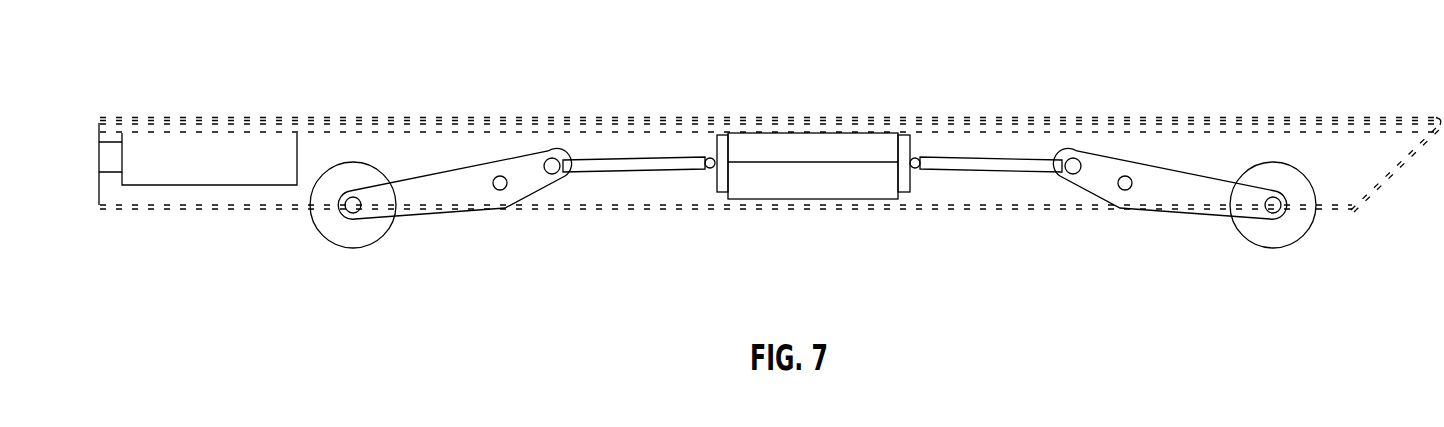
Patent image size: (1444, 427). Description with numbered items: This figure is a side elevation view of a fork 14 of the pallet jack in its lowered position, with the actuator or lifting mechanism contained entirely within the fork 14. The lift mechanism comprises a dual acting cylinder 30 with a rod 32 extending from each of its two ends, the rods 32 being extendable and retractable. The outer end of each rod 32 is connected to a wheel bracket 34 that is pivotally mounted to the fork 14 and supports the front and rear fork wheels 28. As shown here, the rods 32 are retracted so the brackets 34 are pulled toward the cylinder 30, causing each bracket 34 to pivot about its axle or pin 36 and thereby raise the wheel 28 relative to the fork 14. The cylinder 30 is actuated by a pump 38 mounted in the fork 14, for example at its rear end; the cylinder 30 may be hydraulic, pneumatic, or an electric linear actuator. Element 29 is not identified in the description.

The fork 14 is at (710, 118).
The platform floor layer 29 is at (504, 132).
The pump 38 is at (237, 167).
The fork wheel 28 is at (360, 232).
The wheel bracket 34 is at (435, 197).
The axle or pin 36 is at (497, 190).
The rod 32 is at (613, 170).
The dual acting cylinder 30 is at (810, 191).